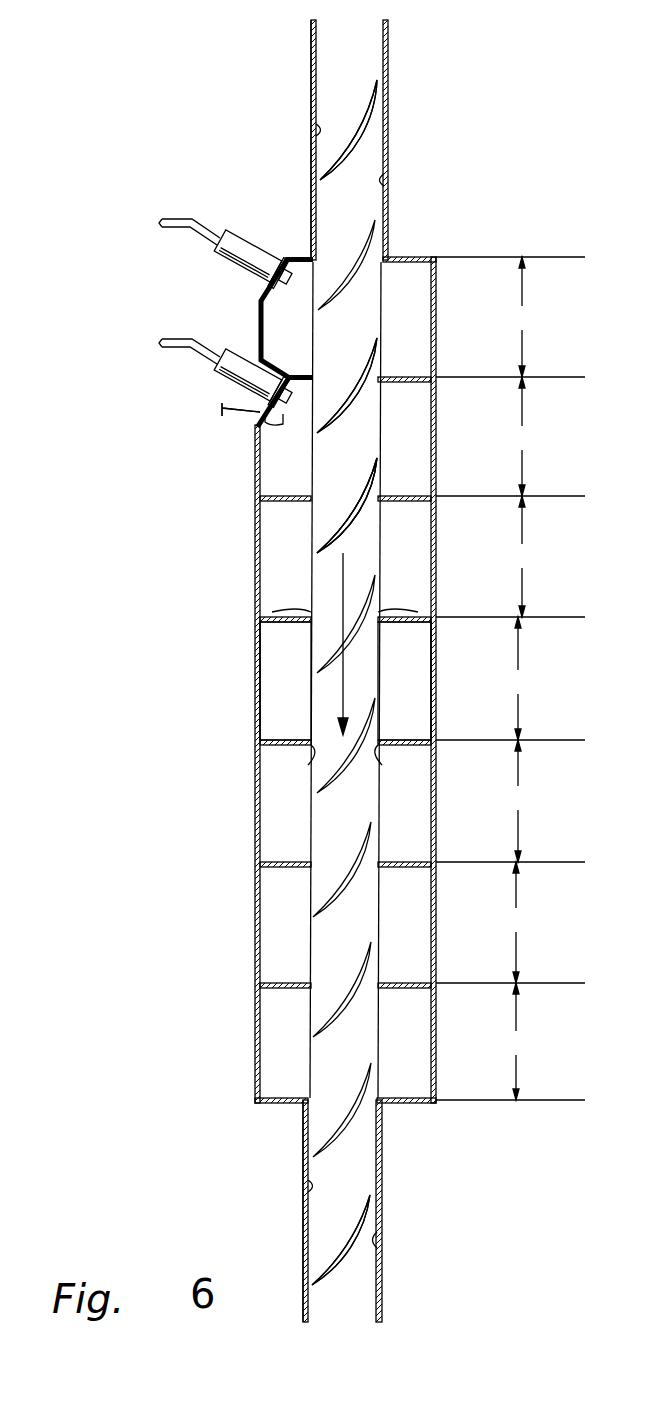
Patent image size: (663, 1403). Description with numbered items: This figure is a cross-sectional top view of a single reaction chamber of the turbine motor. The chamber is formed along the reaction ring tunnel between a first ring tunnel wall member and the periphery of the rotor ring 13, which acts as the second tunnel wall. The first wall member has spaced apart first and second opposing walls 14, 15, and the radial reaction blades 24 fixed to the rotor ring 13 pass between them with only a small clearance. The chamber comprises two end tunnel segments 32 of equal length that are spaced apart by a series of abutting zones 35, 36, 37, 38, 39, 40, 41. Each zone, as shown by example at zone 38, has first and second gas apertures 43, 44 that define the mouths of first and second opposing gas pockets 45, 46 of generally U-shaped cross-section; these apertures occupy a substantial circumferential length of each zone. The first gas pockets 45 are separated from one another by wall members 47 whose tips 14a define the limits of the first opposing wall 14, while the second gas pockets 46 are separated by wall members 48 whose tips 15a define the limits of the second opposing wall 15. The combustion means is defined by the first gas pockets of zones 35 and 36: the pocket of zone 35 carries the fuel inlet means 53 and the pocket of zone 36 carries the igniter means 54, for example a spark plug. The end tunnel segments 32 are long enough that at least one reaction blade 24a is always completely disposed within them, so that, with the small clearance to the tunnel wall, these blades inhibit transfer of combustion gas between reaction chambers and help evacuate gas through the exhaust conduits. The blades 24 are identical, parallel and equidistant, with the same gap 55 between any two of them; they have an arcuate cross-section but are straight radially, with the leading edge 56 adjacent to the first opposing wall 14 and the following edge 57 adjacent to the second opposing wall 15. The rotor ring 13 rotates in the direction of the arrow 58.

The rotor ring 13 is at (316, 1000).
The first opposing wall 14 is at (312, 142).
The tips of wall members 14a is at (311, 612).
The second opposing wall 15 is at (388, 168).
The tips of wall members 15a is at (392, 607).
The radial reaction blades 24 is at (336, 882).
The reaction blade 24a is at (362, 105).
The end tunnel segments 32 is at (312, 214).
The zone 35 is at (523, 317).
The zone 36 is at (523, 436).
The zone 37 is at (523, 556).
The zone 38 is at (519, 678).
The zone 39 is at (519, 801).
The zone 40 is at (517, 922).
The zone 41 is at (517, 1041).
The first gas aperture 43 is at (298, 660).
The second gas aperture 44 is at (395, 662).
The first gas pocket 45 is at (282, 703).
The second gas pocket 46 is at (418, 697).
The wall members 47 is at (280, 615).
The wall members 48 is at (412, 613).
The fuel inlet means 53 is at (226, 232).
The igniter means 54 is at (213, 380).
The gap 55 is at (345, 445).
The leading edge 56 is at (320, 552).
The following edge 57 is at (380, 455).
The arrow 58 is at (410, 550).